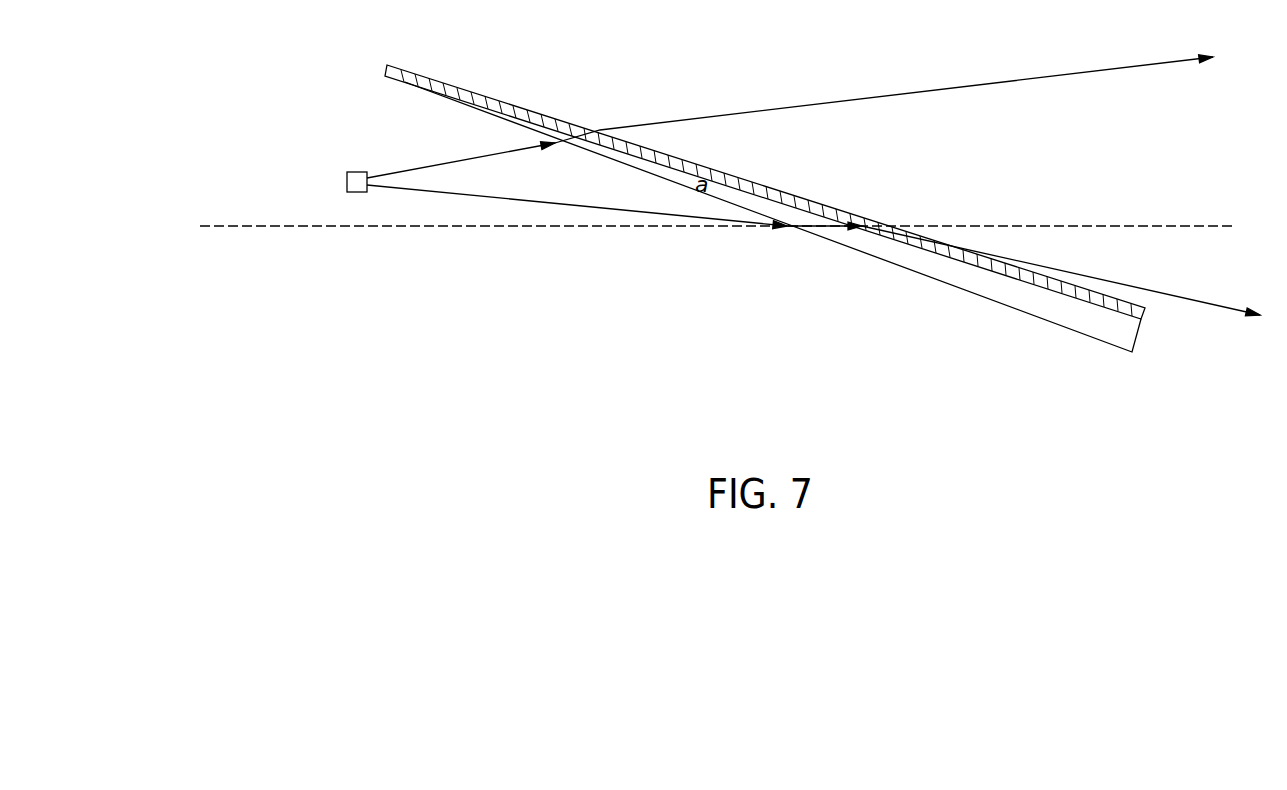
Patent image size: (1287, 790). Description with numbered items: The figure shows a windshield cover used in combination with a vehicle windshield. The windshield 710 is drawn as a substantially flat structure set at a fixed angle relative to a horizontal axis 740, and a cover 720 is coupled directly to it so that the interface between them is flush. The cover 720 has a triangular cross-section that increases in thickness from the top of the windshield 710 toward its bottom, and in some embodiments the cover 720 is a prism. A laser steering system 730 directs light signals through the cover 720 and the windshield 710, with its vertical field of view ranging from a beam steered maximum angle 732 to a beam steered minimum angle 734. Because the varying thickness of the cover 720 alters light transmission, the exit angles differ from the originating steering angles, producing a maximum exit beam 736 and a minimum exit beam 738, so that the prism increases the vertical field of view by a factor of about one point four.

The windshield 710 is at (1145, 312).
The cover 720 is at (1102, 333).
The laser steering system 730 is at (347, 181).
The beam steered maximum angle 732 is at (422, 166).
The beam steered minimum angle 734 is at (614, 209).
The maximum exit beam 736 is at (857, 97).
The minimum exit beam 738 is at (1227, 309).
The horizontal axis 740 is at (237, 227).